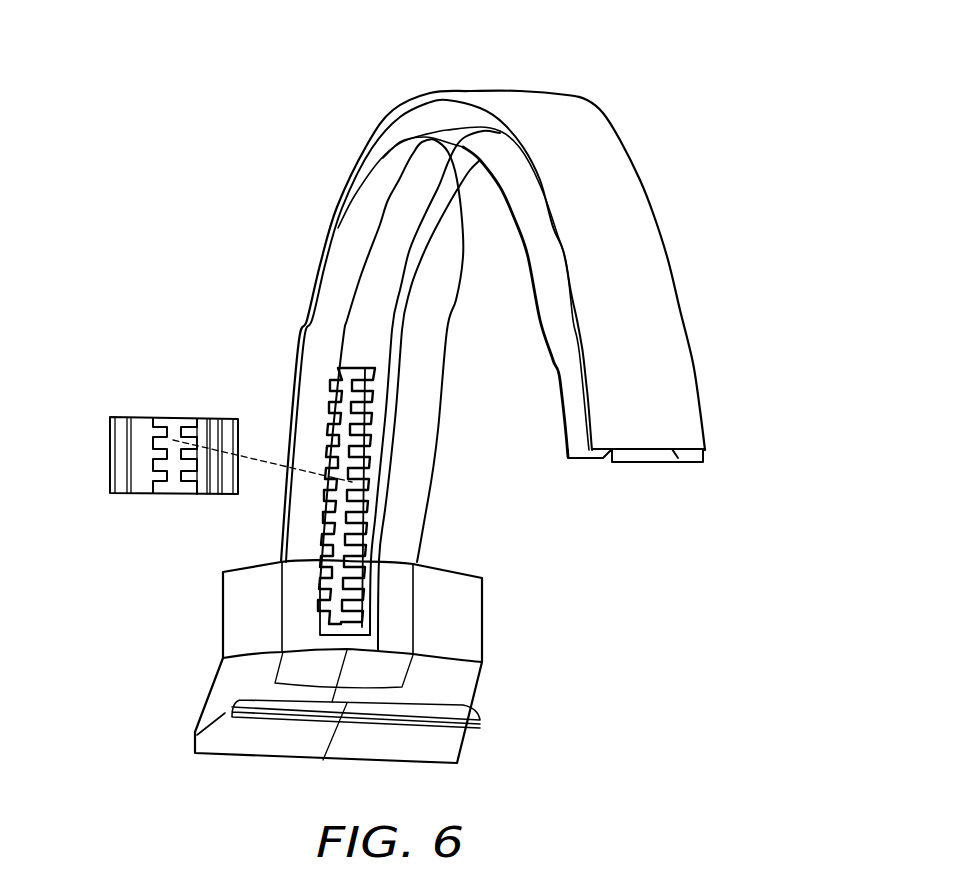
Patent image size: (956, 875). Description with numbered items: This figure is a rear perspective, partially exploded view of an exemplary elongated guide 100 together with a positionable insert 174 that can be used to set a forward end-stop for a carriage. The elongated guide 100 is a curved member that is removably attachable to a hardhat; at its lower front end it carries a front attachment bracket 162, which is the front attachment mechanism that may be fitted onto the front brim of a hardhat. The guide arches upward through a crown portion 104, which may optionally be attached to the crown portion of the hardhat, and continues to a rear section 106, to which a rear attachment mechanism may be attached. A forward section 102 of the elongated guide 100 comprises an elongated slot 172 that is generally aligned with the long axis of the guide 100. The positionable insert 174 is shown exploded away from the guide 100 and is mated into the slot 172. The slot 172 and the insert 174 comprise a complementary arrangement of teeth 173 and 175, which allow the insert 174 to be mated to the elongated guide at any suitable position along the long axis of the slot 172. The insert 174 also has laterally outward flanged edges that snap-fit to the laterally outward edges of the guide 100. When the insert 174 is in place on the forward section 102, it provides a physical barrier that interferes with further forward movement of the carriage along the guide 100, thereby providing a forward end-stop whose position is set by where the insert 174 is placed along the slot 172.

The elongated guide 100 is at (712, 130).
The forward section 102 is at (420, 506).
The crown portion 104 is at (438, 92).
The rear section 106 is at (703, 410).
The front attachment bracket 162 is at (195, 745).
The elongated slot 172 is at (350, 390).
The teeth 173 is at (365, 423).
The positionable insert 174 is at (140, 417).
The teeth 175 is at (185, 477).